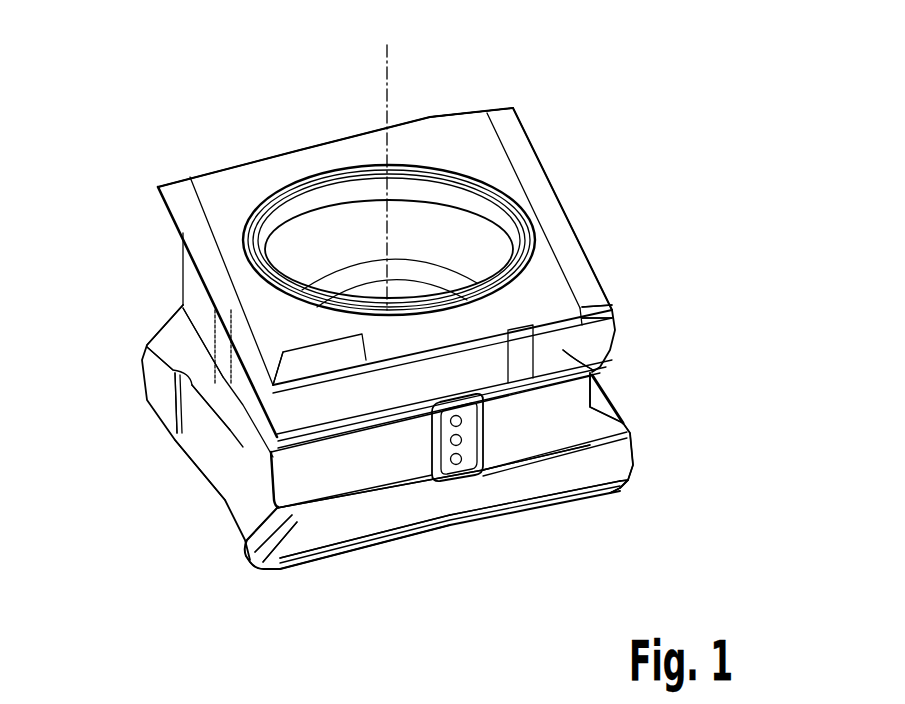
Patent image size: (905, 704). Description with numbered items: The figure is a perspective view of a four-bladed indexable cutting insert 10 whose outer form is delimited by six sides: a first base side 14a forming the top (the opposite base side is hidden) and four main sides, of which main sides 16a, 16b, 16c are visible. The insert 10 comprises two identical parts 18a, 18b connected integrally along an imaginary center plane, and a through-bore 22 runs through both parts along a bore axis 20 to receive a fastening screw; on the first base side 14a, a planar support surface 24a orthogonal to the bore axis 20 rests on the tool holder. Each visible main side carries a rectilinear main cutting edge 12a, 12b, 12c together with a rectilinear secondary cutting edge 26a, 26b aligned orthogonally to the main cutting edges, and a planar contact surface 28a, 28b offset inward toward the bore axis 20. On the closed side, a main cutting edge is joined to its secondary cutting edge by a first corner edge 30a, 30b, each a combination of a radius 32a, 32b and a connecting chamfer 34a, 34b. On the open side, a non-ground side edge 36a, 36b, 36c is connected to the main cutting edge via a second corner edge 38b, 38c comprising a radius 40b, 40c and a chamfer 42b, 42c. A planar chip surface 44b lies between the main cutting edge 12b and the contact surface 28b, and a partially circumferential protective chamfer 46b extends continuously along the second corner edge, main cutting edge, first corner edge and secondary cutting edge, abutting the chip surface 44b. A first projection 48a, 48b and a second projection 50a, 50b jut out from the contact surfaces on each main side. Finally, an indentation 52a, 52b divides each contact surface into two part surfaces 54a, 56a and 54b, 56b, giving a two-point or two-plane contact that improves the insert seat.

The cutting insert 10 is at (576, 96).
The main cutting edge 12a is at (182, 250).
The main cutting edge 12b is at (441, 530).
The main cutting edge 12c is at (572, 205).
The first base side 14a is at (250, 167).
The main side 16a is at (130, 433).
The main side 16b is at (500, 529).
The main side 16c is at (627, 257).
The first part 18a is at (477, 143).
The second part 18b is at (633, 444).
The bore axis 20 is at (388, 73).
The through-bore 22 is at (476, 247).
The planar support surface 24a is at (330, 160).
The secondary cutting edge 26a is at (245, 440).
The secondary cutting edge 26b is at (240, 567).
The contact surface 28a is at (200, 317).
The contact surface 28b is at (563, 423).
The first corner edge 30a is at (357, 372).
The first corner edge 30b is at (297, 650).
The radius 32a is at (267, 400).
The radius 32b is at (265, 565).
The chamfer 34a is at (268, 400).
The chamfer 34b is at (245, 557).
The side edge 36a is at (177, 230).
The side edge 36b is at (633, 453).
The side edge 36c is at (603, 340).
The second corner edge 38b is at (713, 523).
The second corner edge 38c is at (712, 270).
The radius 40b is at (620, 486).
The radius 40c is at (610, 307).
The chamfer 42b is at (628, 486).
The chamfer 42c is at (612, 318).
The chip surface 44b is at (540, 430).
The partially circumferential chamfer 46b is at (341, 550).
The first projection 48a is at (233, 543).
The first projection 48b is at (310, 423).
The second projection 50a is at (153, 373).
The second projection 50b is at (580, 367).
The indentation 52a is at (218, 365).
The indentation 52b is at (480, 500).
The part surface 54a is at (197, 288).
The part surface 54b is at (557, 525).
The part surface 56a is at (248, 405).
The part surface 56b is at (387, 530).